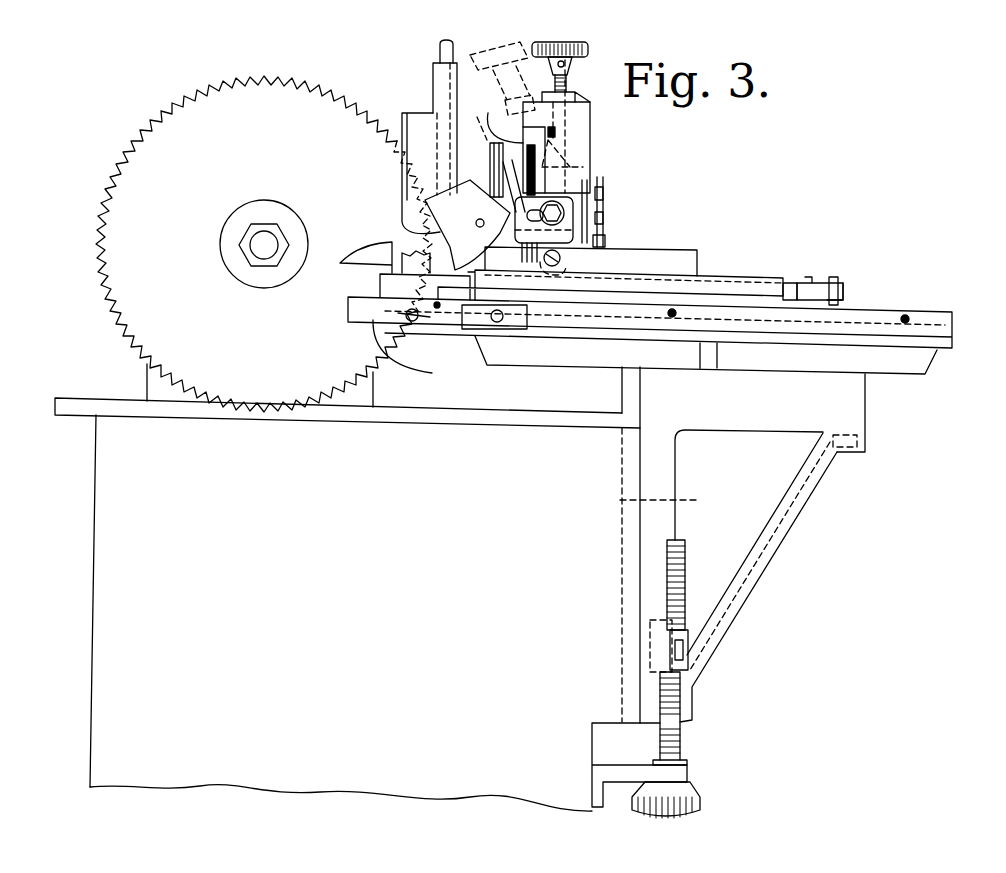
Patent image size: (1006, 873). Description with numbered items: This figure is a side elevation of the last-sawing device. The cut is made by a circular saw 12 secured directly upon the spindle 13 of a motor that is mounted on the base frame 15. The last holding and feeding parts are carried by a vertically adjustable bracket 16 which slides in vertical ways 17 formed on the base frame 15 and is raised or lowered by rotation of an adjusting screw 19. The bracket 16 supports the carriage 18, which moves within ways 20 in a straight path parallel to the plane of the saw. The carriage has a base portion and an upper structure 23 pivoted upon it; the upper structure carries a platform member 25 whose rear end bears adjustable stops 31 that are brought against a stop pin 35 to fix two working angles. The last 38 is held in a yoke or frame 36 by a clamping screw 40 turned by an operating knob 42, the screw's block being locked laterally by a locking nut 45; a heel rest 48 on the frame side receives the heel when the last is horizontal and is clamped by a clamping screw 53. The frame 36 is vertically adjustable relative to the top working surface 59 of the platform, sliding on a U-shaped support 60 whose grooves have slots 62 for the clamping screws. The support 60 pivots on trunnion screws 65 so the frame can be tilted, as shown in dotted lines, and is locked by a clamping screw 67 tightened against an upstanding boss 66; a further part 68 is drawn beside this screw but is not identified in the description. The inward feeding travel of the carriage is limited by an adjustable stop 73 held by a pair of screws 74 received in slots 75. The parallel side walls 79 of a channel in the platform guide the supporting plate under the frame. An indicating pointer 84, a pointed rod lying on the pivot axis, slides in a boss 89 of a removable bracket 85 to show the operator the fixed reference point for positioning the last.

The circular saw 12 is at (192, 107).
The spindle 13 is at (252, 243).
The base frame 15 is at (110, 452).
The vertically adjustable bracket 16 is at (850, 408).
The vertical ways 17 is at (672, 500).
The carriage 18 is at (845, 298).
The adjusting screw 19 is at (683, 600).
The ways 20 is at (952, 319).
The upper structure 23 is at (702, 270).
The platform member 25 is at (722, 298).
The adjustable stops 31 is at (843, 300).
The stop pin 35 is at (833, 282).
The yoke or frame 36 is at (582, 121).
The last 38 is at (462, 192).
The clamping screw 40 is at (566, 80).
The operating knob 42 is at (589, 50).
The locking nut 45 is at (578, 95).
The heel rest 48 is at (566, 200).
The clamping screw 53 is at (603, 203).
The working surface 59 is at (395, 242).
The U-shaped support 60 is at (507, 162).
The slots 62 is at (493, 122).
The trunnion screws 65 is at (603, 219).
The upstanding boss 66 is at (562, 212).
The clamping screw 67 is at (603, 185).
The spring seat 68 is at (605, 238).
The adjustable stop 73 is at (416, 353).
The screws 74 is at (497, 323).
The slots 75 is at (492, 318).
The parallel side walls 79 is at (787, 283).
The indicating pointer 84 is at (440, 52).
The bracket 85 is at (417, 137).
The boss 89 is at (433, 82).